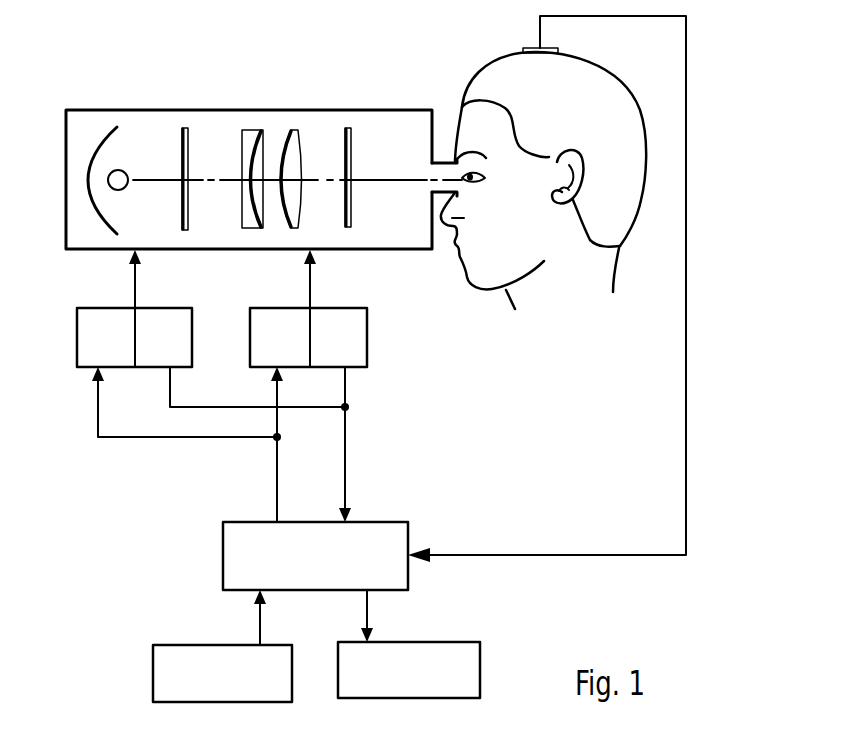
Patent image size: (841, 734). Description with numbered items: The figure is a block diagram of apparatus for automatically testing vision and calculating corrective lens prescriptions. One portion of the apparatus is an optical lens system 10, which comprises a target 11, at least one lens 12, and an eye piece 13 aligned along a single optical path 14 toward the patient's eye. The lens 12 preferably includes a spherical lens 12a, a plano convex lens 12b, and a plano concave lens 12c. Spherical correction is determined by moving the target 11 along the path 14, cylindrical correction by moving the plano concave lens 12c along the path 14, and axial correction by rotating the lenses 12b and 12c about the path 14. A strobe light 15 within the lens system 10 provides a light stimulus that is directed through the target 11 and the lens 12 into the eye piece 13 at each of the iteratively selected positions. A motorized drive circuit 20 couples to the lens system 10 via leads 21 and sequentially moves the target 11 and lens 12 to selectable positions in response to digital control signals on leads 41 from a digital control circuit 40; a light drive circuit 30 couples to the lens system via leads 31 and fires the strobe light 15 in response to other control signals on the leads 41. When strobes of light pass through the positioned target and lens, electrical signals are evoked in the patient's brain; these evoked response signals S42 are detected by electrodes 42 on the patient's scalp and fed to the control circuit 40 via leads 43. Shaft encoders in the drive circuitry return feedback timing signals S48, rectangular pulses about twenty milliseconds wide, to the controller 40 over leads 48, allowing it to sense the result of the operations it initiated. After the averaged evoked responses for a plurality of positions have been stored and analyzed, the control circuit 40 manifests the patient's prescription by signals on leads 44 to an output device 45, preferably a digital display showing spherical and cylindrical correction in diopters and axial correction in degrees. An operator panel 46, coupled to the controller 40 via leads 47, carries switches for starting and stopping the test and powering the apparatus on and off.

The optical lens system 10 is at (224, 110).
The target 11 is at (183, 209).
The lens 12 is at (304, 153).
The spherical lens 12a is at (352, 205).
The plano convex lens 12b is at (298, 203).
The plano concave lens 12c is at (244, 206).
The eye piece 13 is at (453, 160).
The optical path 14 is at (400, 178).
The strobe light 15 is at (108, 128).
The motorized drive circuit 20 is at (367, 331).
The leads 21 is at (312, 293).
The light drive circuit 30 is at (77, 333).
The leads 31 is at (130, 276).
The digital control circuit 40 is at (223, 545).
The leads 41 is at (277, 472).
The electrodes 42 is at (530, 48).
The evoked response signals S42 is at (545, 38).
The leads 43 is at (686, 364).
The leads 44 is at (367, 615).
The output device 45 is at (480, 655).
The operator panel 46 is at (153, 660).
The leads 47 is at (260, 623).
The leads 48 is at (347, 466).
The feedback timing signals S48 is at (347, 496).